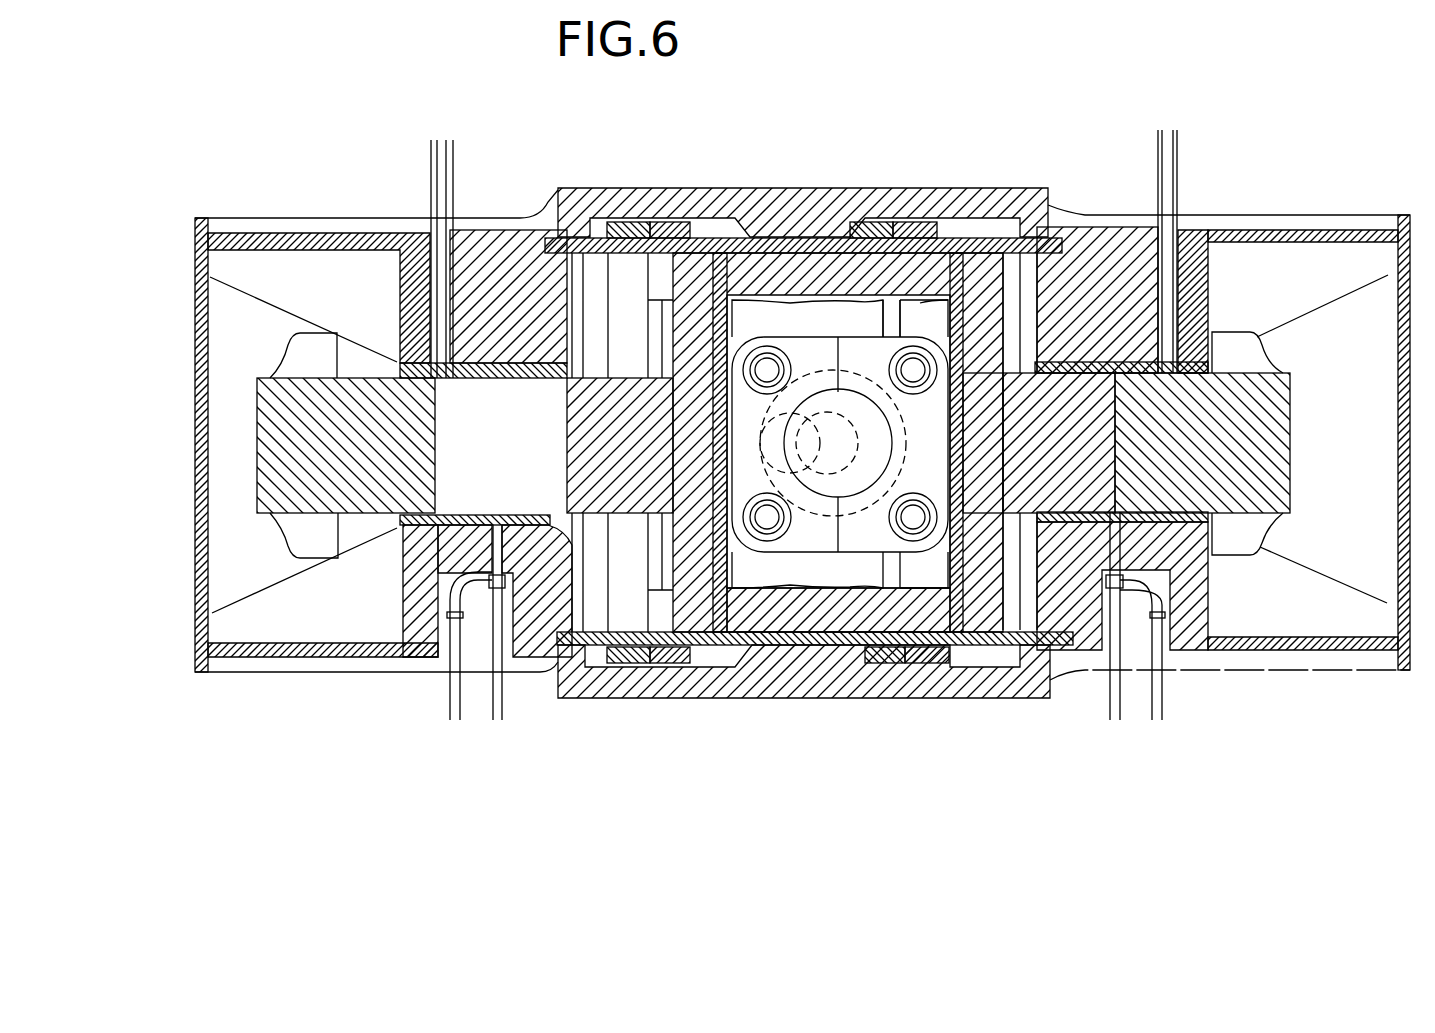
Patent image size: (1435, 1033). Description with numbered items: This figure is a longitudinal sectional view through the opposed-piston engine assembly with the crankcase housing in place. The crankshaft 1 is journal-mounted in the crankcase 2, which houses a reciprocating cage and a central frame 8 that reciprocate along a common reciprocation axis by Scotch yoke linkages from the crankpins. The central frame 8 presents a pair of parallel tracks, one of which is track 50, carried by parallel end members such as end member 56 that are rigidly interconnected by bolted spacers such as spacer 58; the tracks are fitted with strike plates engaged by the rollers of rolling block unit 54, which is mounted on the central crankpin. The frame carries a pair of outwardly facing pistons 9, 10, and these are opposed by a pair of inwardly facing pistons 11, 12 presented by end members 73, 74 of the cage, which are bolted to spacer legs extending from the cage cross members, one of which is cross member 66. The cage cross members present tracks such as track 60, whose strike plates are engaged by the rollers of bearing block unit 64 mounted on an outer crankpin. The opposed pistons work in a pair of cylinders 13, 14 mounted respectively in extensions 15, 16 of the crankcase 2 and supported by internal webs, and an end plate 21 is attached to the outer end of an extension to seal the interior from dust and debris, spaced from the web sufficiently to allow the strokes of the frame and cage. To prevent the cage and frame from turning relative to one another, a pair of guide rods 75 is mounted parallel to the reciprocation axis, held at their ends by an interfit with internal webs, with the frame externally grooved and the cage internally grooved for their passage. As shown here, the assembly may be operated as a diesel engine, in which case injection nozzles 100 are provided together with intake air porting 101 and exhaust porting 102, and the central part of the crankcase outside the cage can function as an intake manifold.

The crankshaft 1 is at (855, 485).
The crankcase 2 is at (668, 200).
The central frame 8 is at (600, 315).
The outwardly facing piston 9 is at (735, 295).
The outwardly facing piston 10 is at (600, 465).
The inwardly facing piston 11 is at (338, 558).
The inwardly facing piston 12 is at (288, 465).
The cylinder 13 is at (460, 522).
The cylinder 14 is at (400, 525).
The crankcase extension 15 is at (305, 218).
The crankcase extension 16 is at (500, 250).
The end plate 21 is at (1410, 215).
The track 50 is at (955, 575).
The rolling block unit 54 is at (878, 540).
The end member 56 is at (692, 275).
The bolted spacer 58 is at (800, 290).
The track 60 is at (888, 305).
The bearing block unit 64 is at (985, 410).
The cross member 66 is at (920, 305).
The end member 73 is at (262, 415).
The end member 74 is at (1290, 397).
The guide rod 75 is at (935, 330).
The injection nozzle 100 is at (500, 525).
The intake air porting 101 is at (550, 692).
The exhaust porting 102 is at (450, 140).